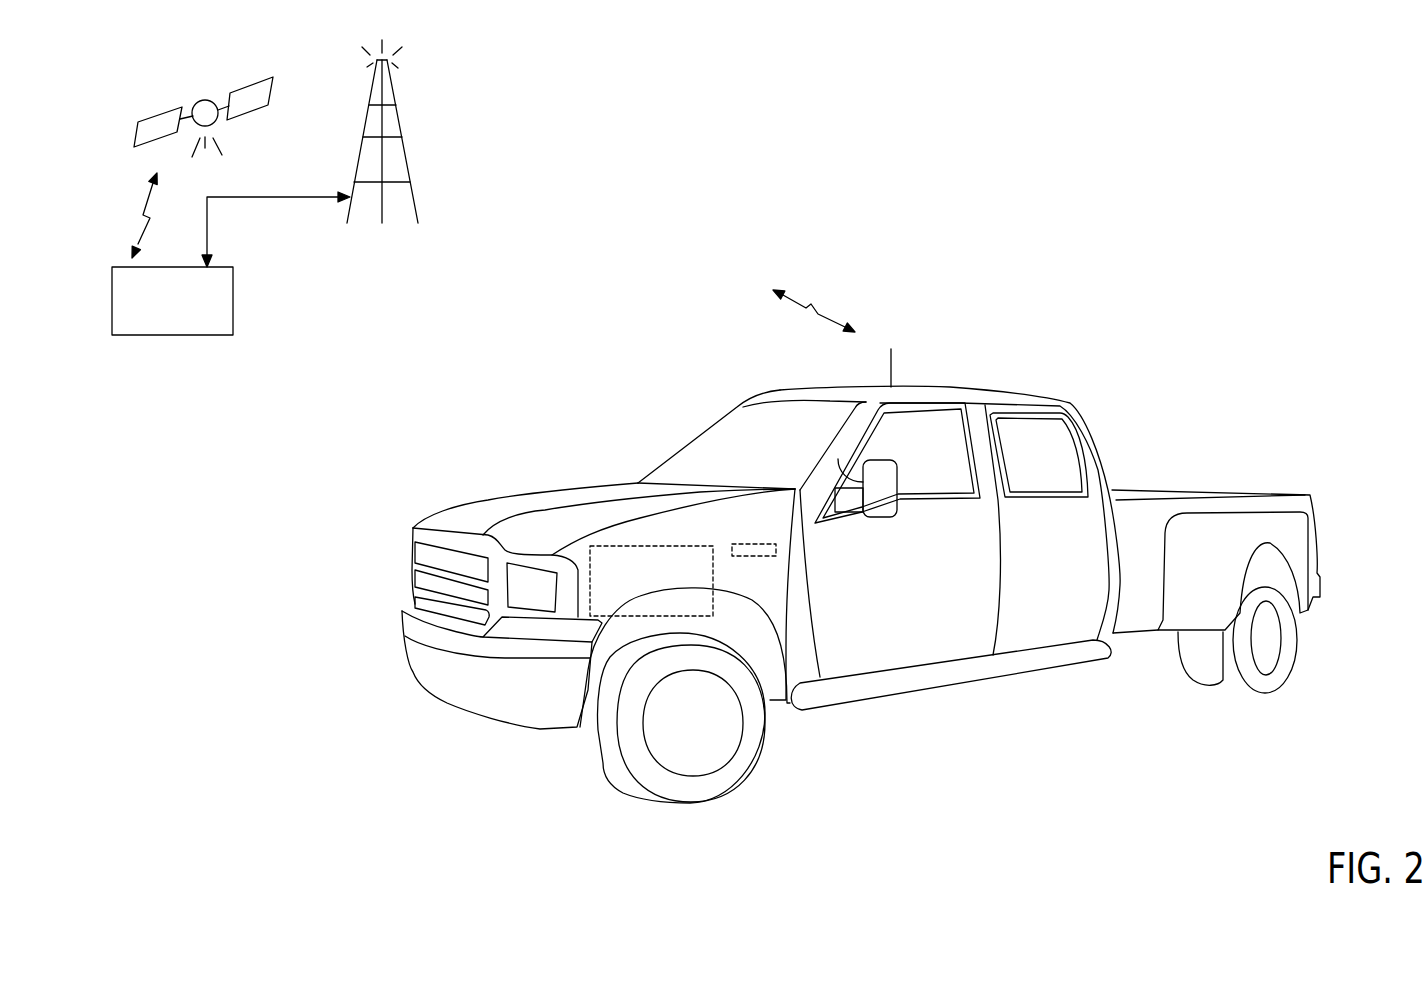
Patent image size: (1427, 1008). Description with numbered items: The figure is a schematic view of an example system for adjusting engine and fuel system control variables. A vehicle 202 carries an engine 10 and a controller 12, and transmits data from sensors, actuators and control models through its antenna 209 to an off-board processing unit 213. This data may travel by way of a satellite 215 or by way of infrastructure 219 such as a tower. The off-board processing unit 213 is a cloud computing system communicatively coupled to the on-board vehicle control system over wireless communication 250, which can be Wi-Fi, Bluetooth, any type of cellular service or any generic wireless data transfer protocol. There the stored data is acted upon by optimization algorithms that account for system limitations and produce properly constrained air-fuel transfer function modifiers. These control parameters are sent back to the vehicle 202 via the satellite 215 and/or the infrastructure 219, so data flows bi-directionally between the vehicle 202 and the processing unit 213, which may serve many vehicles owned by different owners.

The engine 10 is at (664, 591).
The controller 12 is at (754, 556).
The vehicle 202 is at (861, 573).
The antenna 209 is at (895, 363).
The off-board processing unit 213 is at (190, 311).
The satellite 215 is at (197, 107).
The infrastructure 219 is at (353, 167).
The wireless communication 250 is at (822, 312).